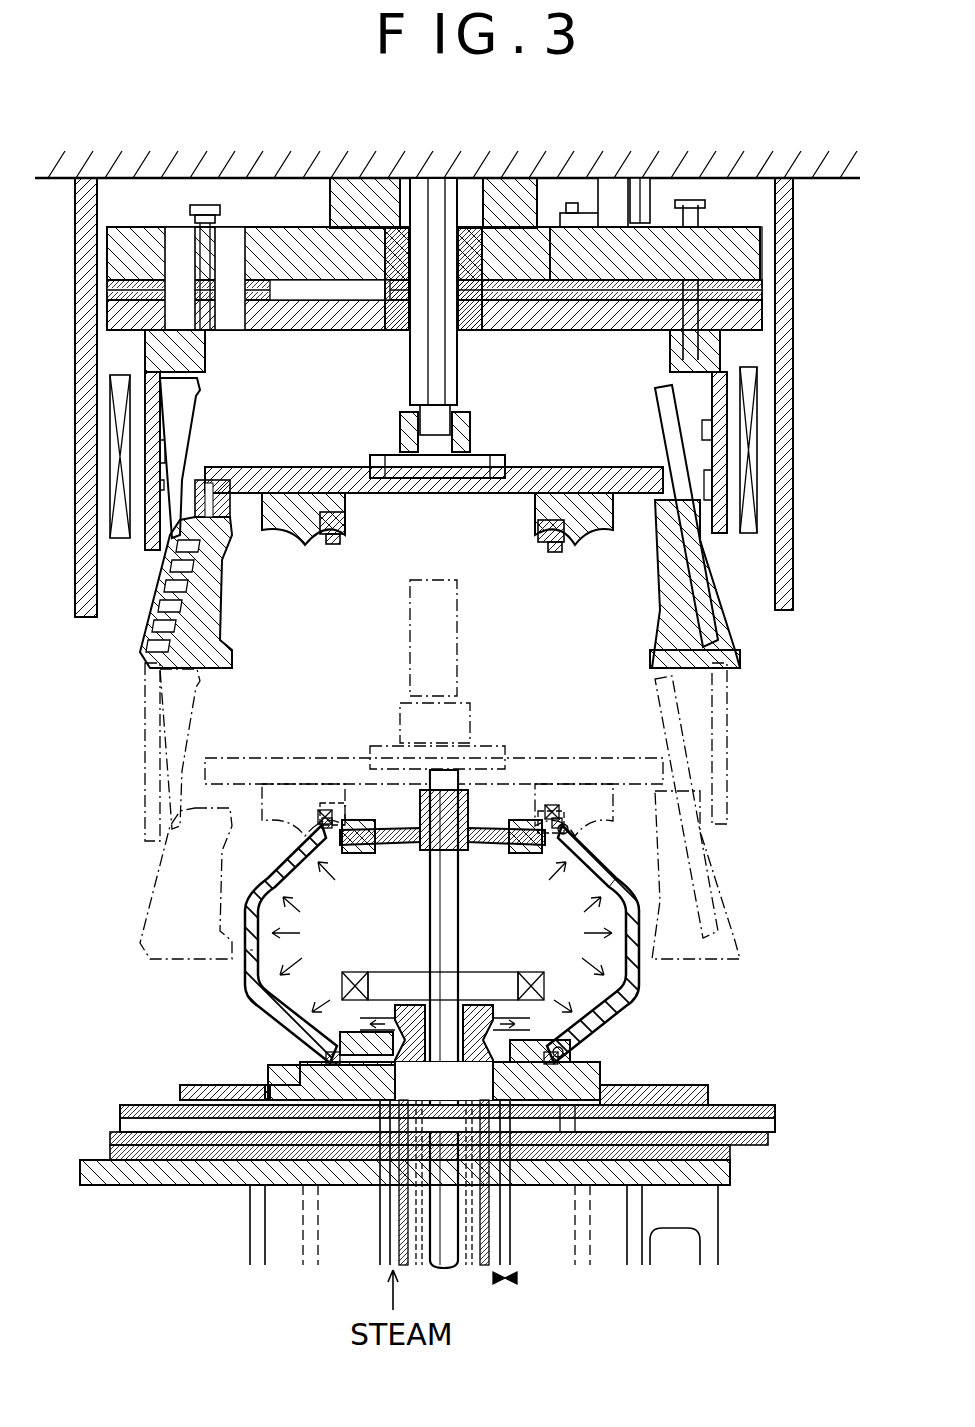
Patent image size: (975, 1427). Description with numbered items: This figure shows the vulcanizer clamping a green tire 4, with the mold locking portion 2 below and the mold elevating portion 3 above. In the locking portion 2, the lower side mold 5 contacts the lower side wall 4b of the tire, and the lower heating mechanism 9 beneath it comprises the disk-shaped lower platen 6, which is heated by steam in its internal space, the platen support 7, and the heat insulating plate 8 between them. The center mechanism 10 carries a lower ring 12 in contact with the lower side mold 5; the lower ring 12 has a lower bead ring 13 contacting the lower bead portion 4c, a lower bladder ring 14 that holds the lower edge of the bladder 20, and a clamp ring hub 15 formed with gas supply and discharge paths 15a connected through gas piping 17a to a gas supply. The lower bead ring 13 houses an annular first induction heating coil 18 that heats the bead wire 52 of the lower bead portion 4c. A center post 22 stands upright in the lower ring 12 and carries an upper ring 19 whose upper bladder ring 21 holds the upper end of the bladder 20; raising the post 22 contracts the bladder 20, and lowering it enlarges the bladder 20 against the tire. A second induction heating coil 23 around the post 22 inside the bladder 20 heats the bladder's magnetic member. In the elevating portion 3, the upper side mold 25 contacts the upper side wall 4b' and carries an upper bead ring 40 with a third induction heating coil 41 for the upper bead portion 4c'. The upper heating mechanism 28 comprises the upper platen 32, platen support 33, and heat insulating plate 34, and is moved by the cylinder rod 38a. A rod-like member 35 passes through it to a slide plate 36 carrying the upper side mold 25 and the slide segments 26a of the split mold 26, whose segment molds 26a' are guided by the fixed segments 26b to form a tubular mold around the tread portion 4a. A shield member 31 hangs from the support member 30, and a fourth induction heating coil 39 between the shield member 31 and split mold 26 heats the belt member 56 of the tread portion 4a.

The mold locking portion 2 is at (790, 1035).
The mold elevating portion 3 is at (826, 192).
The green tire 4 is at (645, 985).
The tread portion 4a is at (640, 920).
The lower side wall 4b is at (614, 1031).
The upper side wall 4b' is at (689, 877).
The lower bead portion 4c is at (601, 1047).
The upper bead portion 4c' is at (602, 832).
The lower side mold 5 is at (615, 1070).
The lower platen 6 is at (770, 1118).
The platen support 7 is at (735, 1175).
The heat insulating plate 8 is at (735, 1150).
The lower heating mechanism 9 is at (833, 1100).
The center mechanism 10 is at (520, 1288).
The lower ring 12 is at (298, 1095).
The lower bead ring 13 is at (340, 1100).
The lower bladder ring 14 is at (340, 1040).
The clamp ring hub 15 is at (400, 1015).
The gas supply and discharge paths 15a is at (370, 1020).
The gas piping 17a is at (385, 1215).
The first induction heating coil 18 is at (305, 1068).
The upper ring 19 is at (480, 805).
The bladder 20 is at (252, 998).
The upper bladder ring 21 is at (490, 820).
The center post 22 is at (460, 892).
The second induction heating coil 23 is at (420, 972).
The upper side mold 25 is at (594, 520).
The split mold 26 is at (868, 478).
The slide segment 26a is at (502, 719).
The segment molds 26a' is at (731, 649).
The fixed segments 26b is at (700, 470).
The upper heating mechanism 28 is at (845, 240).
The support member 30 is at (135, 180).
The shield member 31 is at (796, 595).
The upper platen 32 is at (760, 315).
The platen support 33 is at (735, 250).
The heat insulating plate 34 is at (750, 288).
The rod-like member 35 is at (445, 368).
The slide plate 36 is at (555, 475).
The cylinder rod 38a is at (645, 193).
The fourth induction heating coil 39 is at (122, 540).
The upper bead ring 40 is at (540, 528).
The third induction heating coil 41 is at (548, 548).
The bead wire 52 is at (318, 828).
The belt member 56 is at (250, 915).